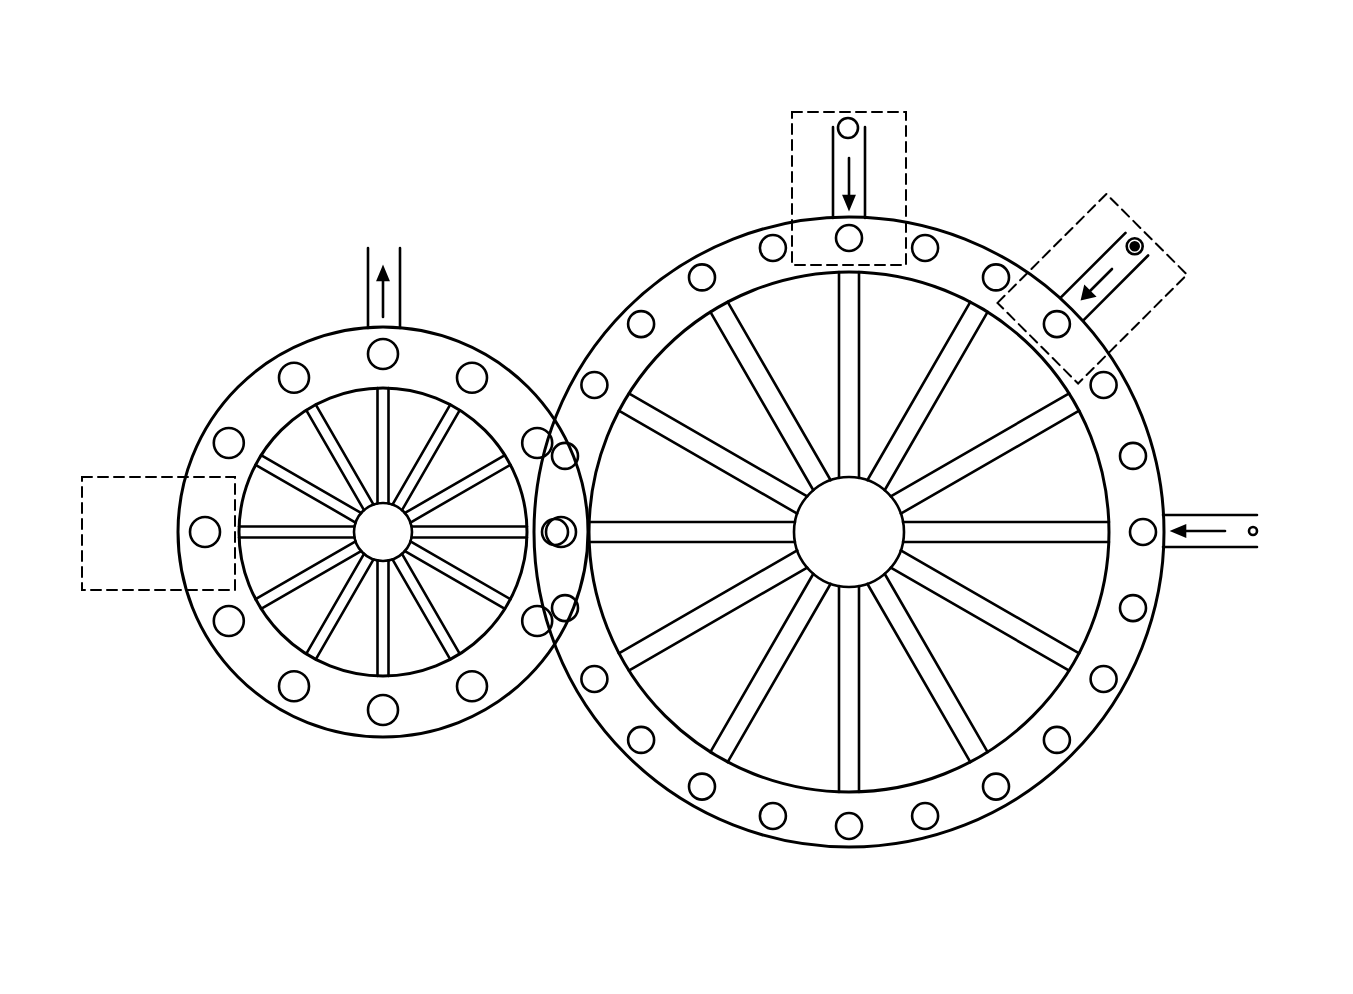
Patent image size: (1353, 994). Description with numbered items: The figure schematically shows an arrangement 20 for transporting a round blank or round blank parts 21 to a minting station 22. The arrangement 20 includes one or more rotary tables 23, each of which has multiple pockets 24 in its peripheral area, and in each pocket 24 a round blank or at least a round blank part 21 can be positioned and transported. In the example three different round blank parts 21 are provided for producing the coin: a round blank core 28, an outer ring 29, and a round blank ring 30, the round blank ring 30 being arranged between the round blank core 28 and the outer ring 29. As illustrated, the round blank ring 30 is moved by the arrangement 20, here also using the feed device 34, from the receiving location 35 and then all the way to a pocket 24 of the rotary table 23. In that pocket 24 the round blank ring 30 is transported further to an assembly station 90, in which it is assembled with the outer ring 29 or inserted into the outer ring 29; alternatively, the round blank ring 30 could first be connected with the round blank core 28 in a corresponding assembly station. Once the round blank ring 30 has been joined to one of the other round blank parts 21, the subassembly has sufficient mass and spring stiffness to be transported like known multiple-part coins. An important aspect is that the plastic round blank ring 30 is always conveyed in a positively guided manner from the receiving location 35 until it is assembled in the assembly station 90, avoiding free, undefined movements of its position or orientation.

The arrangement 20 is at (1174, 135).
The round blank parts 21 is at (1037, 307).
The minting station 22 is at (115, 475).
The rotary table 23 is at (715, 818).
The pockets 24 is at (992, 272).
The round blank core 28 is at (1255, 527).
The outer ring 29 is at (1141, 243).
The round blank ring 30 is at (857, 123).
The feed device 34 is at (907, 132).
The receiving location 35 is at (822, 121).
The assembly station 90 is at (1157, 305).